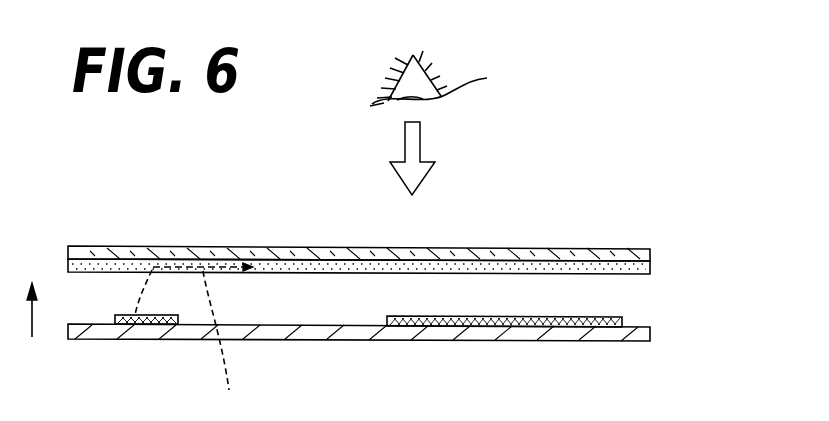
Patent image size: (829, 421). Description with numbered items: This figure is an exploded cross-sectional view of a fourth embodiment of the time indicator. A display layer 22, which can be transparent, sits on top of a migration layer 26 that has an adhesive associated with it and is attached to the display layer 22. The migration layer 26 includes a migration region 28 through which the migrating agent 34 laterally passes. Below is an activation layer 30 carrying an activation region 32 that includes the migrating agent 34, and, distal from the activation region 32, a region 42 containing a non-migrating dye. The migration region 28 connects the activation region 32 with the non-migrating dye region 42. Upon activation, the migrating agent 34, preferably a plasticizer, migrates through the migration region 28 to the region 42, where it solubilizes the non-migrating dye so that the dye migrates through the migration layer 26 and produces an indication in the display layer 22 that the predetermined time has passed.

The display layer 22 is at (623, 250).
The migration layer 26 is at (650, 268).
The migration region 28 is at (223, 277).
The activation layer 30 is at (590, 342).
The activation region 32 is at (127, 314).
The migrating agent 34 is at (189, 345).
The non-migrating dye region 42 is at (622, 322).